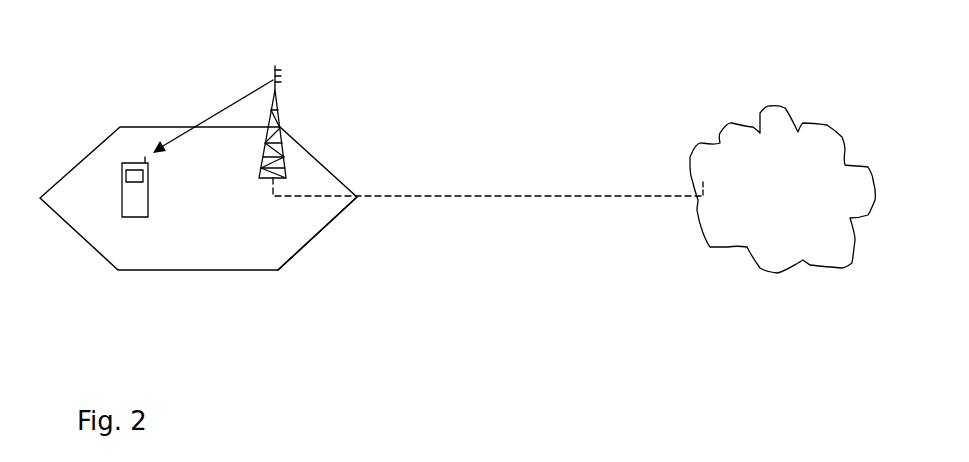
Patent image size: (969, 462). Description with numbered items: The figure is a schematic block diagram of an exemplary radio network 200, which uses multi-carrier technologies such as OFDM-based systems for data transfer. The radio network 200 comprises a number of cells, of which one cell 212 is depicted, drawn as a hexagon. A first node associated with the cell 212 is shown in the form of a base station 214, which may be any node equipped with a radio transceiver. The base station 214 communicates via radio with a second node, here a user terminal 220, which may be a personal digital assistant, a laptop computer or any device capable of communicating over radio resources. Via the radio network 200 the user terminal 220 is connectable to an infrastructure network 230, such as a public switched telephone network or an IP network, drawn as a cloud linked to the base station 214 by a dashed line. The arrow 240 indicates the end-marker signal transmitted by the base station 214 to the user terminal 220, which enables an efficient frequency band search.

The radio network 200 is at (128, 287).
The cell 212 is at (287, 235).
The base station 214 is at (283, 130).
The user terminal 220 is at (121, 192).
The infrastructure network 230 is at (730, 243).
The downlink transmission 240 is at (212, 112).